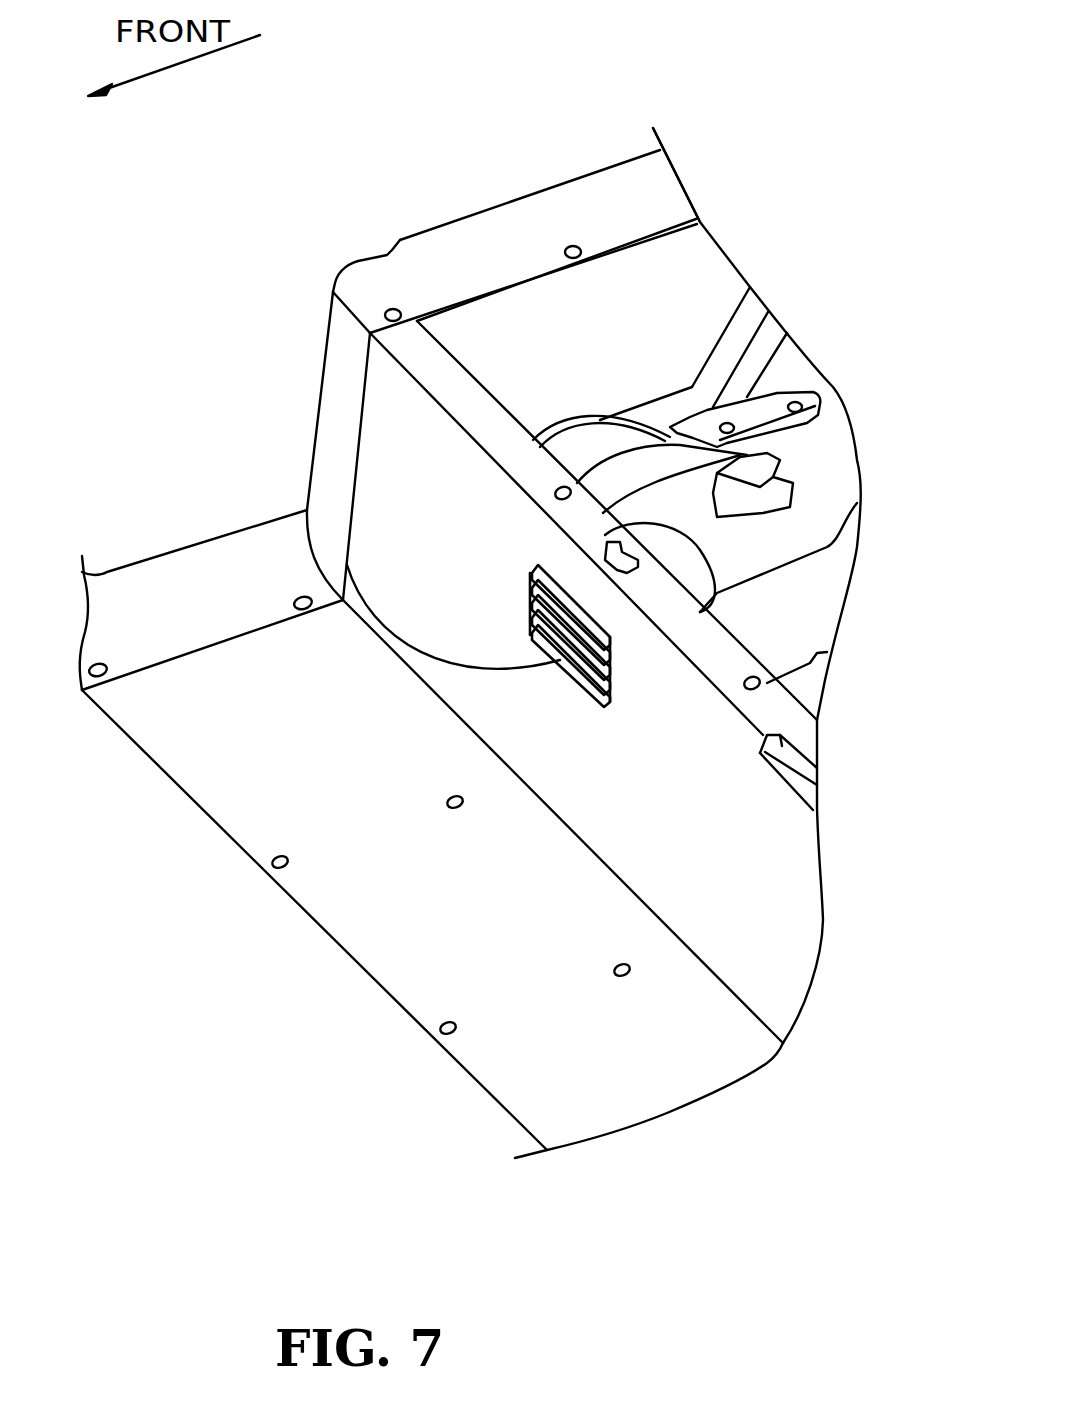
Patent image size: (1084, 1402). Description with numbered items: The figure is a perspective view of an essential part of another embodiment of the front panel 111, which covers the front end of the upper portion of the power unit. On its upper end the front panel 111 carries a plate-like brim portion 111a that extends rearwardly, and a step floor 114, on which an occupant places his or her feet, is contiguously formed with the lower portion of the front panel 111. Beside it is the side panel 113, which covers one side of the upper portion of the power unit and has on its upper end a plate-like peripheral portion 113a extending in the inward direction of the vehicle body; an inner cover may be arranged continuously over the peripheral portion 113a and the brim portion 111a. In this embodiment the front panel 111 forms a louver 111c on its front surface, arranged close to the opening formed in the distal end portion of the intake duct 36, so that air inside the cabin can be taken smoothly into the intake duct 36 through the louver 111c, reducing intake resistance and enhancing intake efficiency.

The intake duct 36 is at (757, 558).
The front panel 111 is at (473, 667).
The brim portion 111a is at (420, 358).
The louver 111c is at (307, 508).
The side panel 113 is at (457, 220).
The peripheral portion 113a is at (598, 190).
The step floor 114 is at (380, 920).